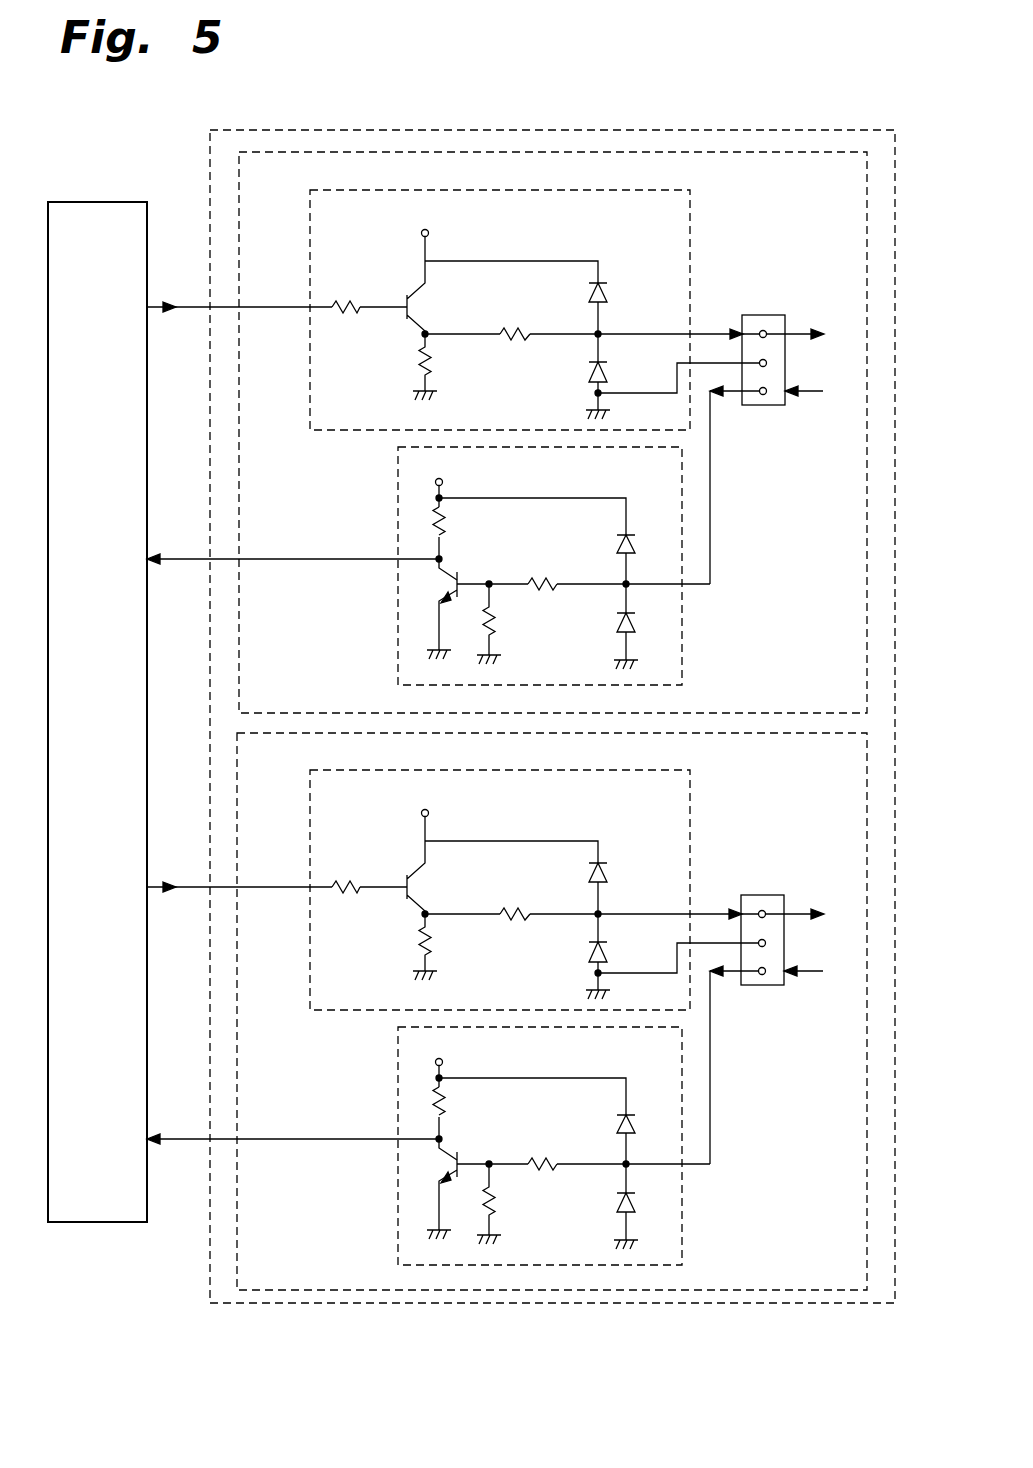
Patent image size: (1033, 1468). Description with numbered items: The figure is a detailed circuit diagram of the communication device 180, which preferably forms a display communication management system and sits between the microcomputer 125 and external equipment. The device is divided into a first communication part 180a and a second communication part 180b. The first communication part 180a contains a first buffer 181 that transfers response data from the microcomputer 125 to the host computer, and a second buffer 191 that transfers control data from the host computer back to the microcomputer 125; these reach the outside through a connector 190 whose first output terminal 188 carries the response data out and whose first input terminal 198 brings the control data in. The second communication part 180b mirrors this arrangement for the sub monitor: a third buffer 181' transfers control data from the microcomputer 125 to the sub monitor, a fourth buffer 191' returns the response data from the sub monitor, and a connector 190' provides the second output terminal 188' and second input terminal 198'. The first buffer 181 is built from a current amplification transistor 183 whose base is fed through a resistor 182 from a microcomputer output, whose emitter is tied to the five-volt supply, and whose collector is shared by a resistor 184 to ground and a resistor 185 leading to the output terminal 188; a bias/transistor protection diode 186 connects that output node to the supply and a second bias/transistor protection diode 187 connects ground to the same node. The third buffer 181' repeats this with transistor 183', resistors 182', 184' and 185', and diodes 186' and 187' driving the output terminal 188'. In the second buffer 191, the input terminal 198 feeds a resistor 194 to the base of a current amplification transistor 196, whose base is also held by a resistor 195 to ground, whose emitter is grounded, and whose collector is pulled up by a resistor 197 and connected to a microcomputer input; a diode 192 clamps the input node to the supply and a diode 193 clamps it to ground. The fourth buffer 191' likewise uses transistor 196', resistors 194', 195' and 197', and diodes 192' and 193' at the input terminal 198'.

The microcomputer 125 is at (90, 202).
The communication device 180 is at (210, 130).
The first communication part 180a is at (237, 1215).
The second communication part 180b is at (239, 185).
The first buffer 181 is at (455, 890).
The third buffer 181' is at (456, 310).
The resistor 182 is at (341, 853).
The resistor 182' is at (340, 273).
The current amplification transistor 183 is at (451, 877).
The current amplification transistor 183' is at (453, 297).
The resistor 184 is at (459, 947).
The resistor 184' is at (461, 367).
The resistor 185 is at (529, 939).
The resistor 185' is at (532, 359).
The bias/transistor protection diode 186 is at (620, 847).
The bias/transistor protection diode 186' is at (622, 267).
The bias/transistor protection diode 187 is at (621, 936).
The bias/transistor protection diode 187' is at (624, 356).
The first output terminal 188 is at (801, 938).
The second output terminal 188' is at (805, 358).
The connector 190 is at (772, 998).
The connector 190' is at (777, 417).
The second buffer 191 is at (468, 1146).
The fourth buffer 191' is at (471, 566).
The bias/transistor protection diode 192 is at (590, 1112).
The bias/transistor protection diode 192' is at (590, 532).
The bias/transistor protection diode 193 is at (669, 1221).
The bias/transistor protection diode 193' is at (671, 641).
The resistor 194 is at (560, 1183).
The resistor 194' is at (562, 603).
The resistor 195 is at (516, 1204).
The resistor 195' is at (518, 624).
The current amplification transistor 196 is at (473, 1183).
The current amplification transistor 196' is at (475, 603).
The resistor 197 is at (474, 1097).
The resistor 197' is at (476, 517).
The first input terminal 198 is at (757, 1067).
The second input terminal 198' is at (762, 487).